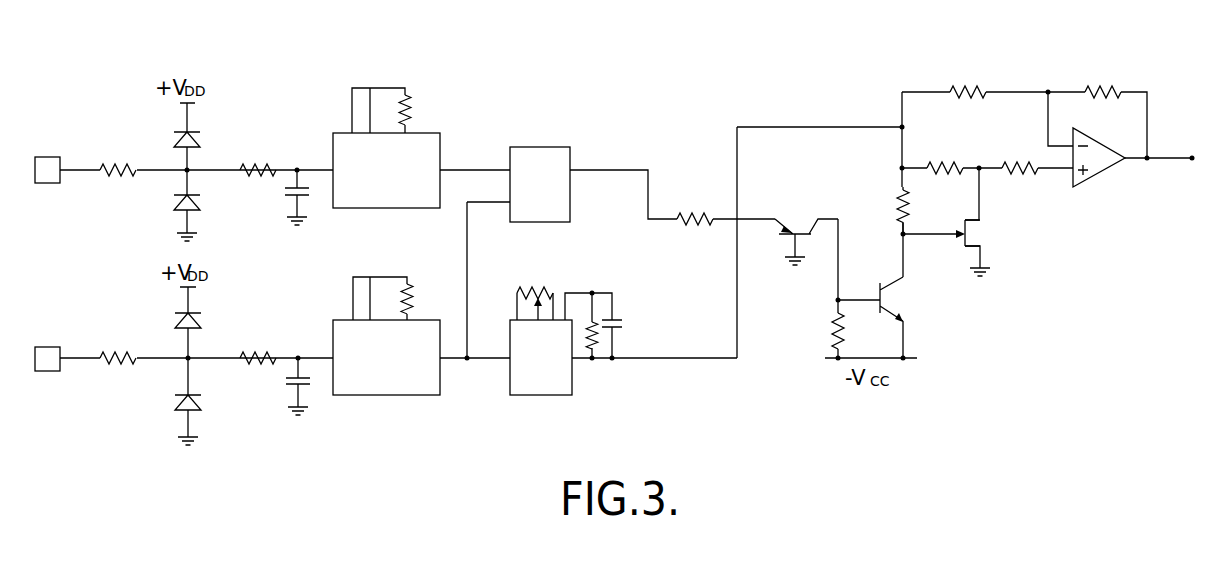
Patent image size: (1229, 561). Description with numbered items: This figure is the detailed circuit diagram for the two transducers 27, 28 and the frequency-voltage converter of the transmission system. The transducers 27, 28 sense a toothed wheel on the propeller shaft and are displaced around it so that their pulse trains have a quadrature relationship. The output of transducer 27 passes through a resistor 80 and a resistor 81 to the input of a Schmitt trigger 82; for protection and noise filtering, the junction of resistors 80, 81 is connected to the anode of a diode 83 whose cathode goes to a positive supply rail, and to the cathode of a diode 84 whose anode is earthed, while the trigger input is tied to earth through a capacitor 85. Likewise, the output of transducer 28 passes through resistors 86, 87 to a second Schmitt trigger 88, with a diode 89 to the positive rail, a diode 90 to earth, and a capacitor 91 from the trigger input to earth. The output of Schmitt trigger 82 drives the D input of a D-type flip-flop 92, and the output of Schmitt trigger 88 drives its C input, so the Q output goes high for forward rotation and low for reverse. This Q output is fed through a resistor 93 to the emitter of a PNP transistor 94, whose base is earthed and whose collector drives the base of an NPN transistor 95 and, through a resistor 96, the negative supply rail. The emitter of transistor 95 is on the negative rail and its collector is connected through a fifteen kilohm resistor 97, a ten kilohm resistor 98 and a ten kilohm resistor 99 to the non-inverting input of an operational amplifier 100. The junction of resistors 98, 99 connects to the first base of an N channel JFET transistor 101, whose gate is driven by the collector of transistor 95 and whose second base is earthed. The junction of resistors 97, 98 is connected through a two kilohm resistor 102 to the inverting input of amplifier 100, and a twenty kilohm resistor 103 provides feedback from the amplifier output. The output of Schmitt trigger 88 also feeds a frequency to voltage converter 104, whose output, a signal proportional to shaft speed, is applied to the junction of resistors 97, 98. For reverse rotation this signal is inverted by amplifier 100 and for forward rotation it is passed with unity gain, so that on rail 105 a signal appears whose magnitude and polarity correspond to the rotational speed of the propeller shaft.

The transducer 27 is at (43, 173).
The transducer 28 is at (47, 367).
The resistor 80 is at (118, 178).
The resistor 81 is at (257, 178).
The Schmitt trigger 82 is at (397, 188).
The diode 83 is at (202, 138).
The diode 84 is at (175, 203).
The capacitor 85 is at (308, 193).
The resistor 86 is at (119, 366).
The resistor 87 is at (257, 366).
The Schmitt trigger 88 is at (392, 382).
The diode 89 is at (202, 323).
The diode 90 is at (182, 407).
The capacitor 91 is at (287, 386).
The flip-flop 92 is at (540, 160).
The resistor 93 is at (689, 226).
The PNP transistor 94 is at (784, 230).
The NPN transistor 95 is at (878, 308).
The resistor 96 is at (830, 336).
The resistor 97 is at (895, 209).
The resistor 98 is at (938, 162).
The resistor 99 is at (1015, 162).
The operational amplifier 100 is at (1107, 165).
The N channel JFET transistor 101 is at (960, 223).
The resistor 102 is at (968, 86).
The resistor 103 is at (1100, 86).
The frequency to voltage converter 104 is at (547, 377).
The rail 105 is at (1173, 162).